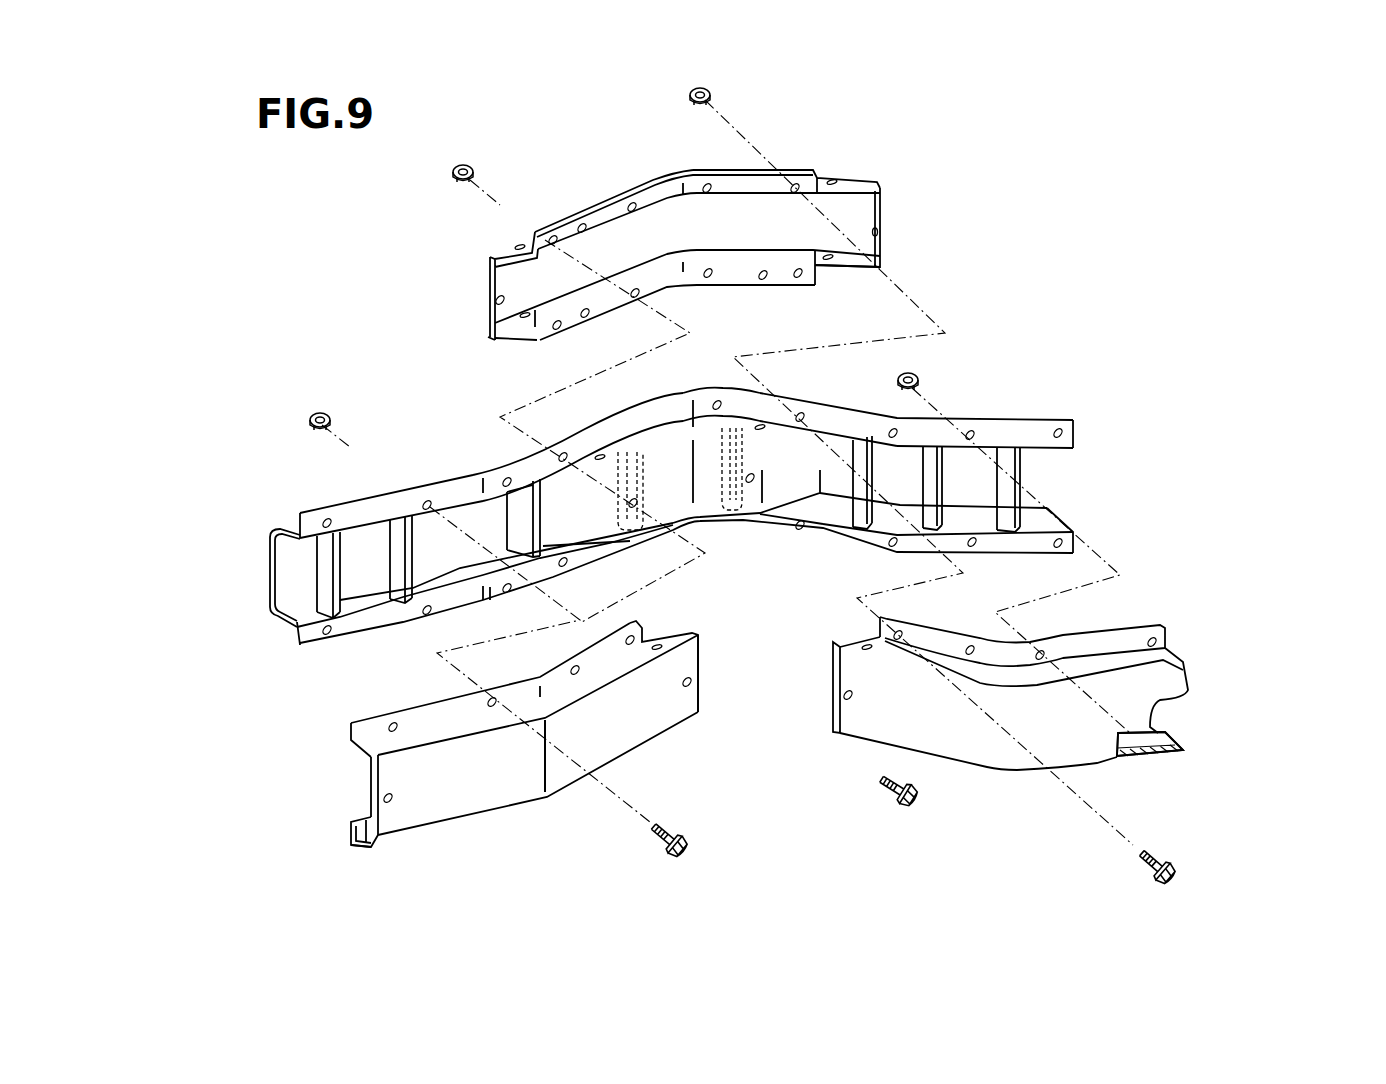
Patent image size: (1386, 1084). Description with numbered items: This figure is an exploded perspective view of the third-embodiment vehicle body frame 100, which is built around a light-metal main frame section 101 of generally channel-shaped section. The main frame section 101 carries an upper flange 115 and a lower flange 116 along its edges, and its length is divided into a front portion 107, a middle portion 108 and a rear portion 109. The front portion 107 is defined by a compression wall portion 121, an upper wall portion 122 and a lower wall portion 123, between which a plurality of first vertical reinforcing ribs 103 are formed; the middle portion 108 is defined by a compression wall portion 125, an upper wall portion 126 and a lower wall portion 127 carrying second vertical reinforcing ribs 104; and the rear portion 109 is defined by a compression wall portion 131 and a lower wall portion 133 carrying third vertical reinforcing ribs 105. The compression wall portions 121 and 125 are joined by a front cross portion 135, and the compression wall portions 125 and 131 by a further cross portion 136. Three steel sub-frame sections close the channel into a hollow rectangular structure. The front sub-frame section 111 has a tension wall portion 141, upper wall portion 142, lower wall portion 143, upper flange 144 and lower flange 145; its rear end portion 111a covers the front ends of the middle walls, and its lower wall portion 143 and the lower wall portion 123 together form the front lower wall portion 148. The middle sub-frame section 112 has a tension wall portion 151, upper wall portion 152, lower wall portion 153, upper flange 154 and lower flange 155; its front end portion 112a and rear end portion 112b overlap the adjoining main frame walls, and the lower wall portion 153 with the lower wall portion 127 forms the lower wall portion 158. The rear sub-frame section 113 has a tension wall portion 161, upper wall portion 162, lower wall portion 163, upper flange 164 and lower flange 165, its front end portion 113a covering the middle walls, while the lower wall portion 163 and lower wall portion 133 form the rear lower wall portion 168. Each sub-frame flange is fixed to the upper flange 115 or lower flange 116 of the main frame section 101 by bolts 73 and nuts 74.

The bolt 73 is at (655, 832).
The nut 74 is at (703, 88).
The vehicle body frame 100 is at (300, 250).
The main frame section 101 is at (268, 548).
The first vertical reinforcing rib 103 is at (323, 575).
The second vertical reinforcing rib 104 is at (630, 455).
The third vertical reinforcing rib 105 is at (927, 497).
The front portion 107 is at (347, 500).
The middle portion 108 is at (592, 423).
The rear portion 109 is at (1017, 418).
The front sub-frame section 111 is at (523, 810).
The rear end portion 111a is at (698, 707).
The middle sub-frame section 112 is at (640, 178).
The front end portion 112a is at (500, 252).
The rear end portion 112b is at (885, 200).
The rear sub-frame section 113 is at (995, 772).
The front end portion 113a is at (840, 730).
The upper flange 115 is at (463, 487).
The lower flange 116 is at (460, 607).
The compression wall portion 121 is at (365, 532).
The upper wall portion 122 is at (266, 522).
The lower wall portion 123 is at (363, 600).
The compression wall portion 125 is at (682, 502).
The upper wall portion 126 is at (693, 423).
The lower wall portion 127 is at (743, 520).
The compression wall portion 131 is at (958, 465).
The lower wall portion 133 is at (957, 520).
The front cross portion 135 is at (583, 527).
The cross portion 136 is at (793, 490).
The tension wall portion 141 is at (622, 737).
The upper wall portion 142 is at (433, 730).
The lower wall portion 143 is at (357, 807).
The upper flange 144 is at (437, 715).
The lower flange 145 is at (362, 842).
The front lower wall portion 148 is at (250, 693).
The tension wall portion 151 is at (605, 255).
The upper wall portion 152 is at (845, 180).
The lower wall portion 153 is at (858, 262).
The upper flange 154 is at (748, 185).
The lower flange 155 is at (783, 280).
The lower wall portion 158 is at (847, 266).
The tension wall portion 161 is at (1083, 747).
The upper wall portion 162 is at (1100, 667).
The lower wall portion 163 is at (1180, 739).
The upper flange 164 is at (1008, 653).
The lower flange 165 is at (1153, 743).
The rear lower wall portion 168 is at (1150, 744).